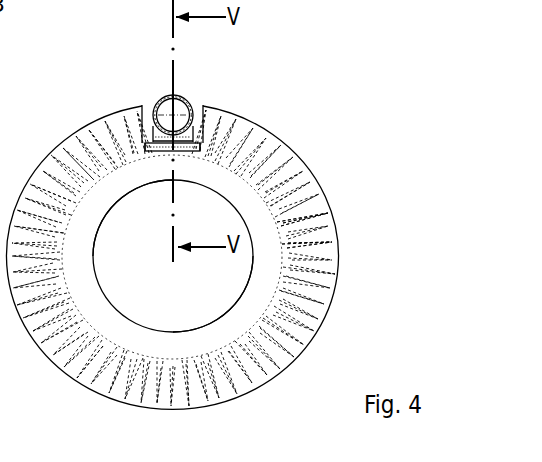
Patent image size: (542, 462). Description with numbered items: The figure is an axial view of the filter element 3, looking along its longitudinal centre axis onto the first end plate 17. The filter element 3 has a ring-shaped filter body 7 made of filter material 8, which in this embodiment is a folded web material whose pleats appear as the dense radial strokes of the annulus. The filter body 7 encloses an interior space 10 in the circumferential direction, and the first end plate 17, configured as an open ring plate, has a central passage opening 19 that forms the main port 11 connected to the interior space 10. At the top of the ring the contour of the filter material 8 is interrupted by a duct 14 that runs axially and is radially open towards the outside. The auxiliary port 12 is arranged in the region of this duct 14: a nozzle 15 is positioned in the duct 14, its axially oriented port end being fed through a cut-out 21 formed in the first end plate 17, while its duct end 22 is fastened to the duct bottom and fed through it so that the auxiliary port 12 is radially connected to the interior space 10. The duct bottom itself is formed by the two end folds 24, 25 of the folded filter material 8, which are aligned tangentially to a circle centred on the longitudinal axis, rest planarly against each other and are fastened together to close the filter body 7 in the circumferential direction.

The filter element 3 is at (306, 95).
The first end plate 17 is at (306, 157).
The filter body 7 is at (328, 213).
The filter material 8 is at (340, 240).
The interior space 10 is at (183, 293).
The main port 11 is at (112, 307).
The central passage opening 19 is at (213, 321).
The auxiliary port 12 is at (172, 112).
The cut-out 21 is at (150, 107).
The duct 14 is at (197, 110).
The nozzle 15 is at (150, 119).
The duct end 22 is at (172, 142).
The end fold 24 is at (155, 142).
The end fold 25 is at (182, 142).